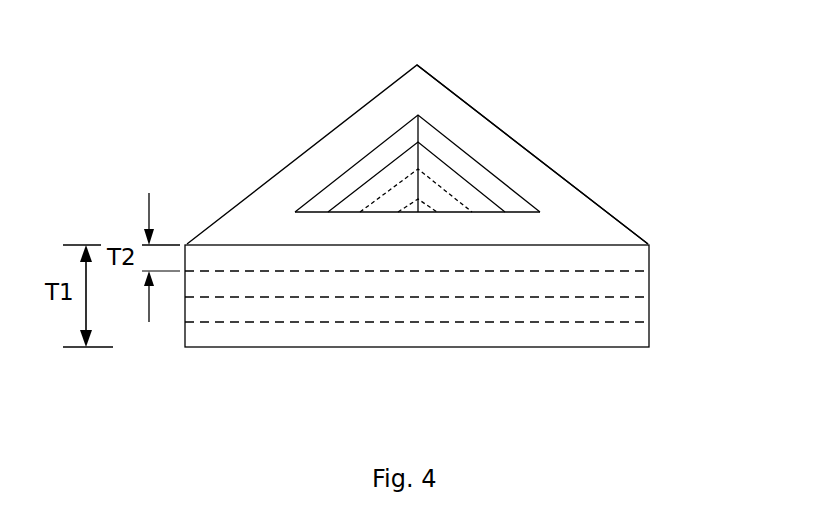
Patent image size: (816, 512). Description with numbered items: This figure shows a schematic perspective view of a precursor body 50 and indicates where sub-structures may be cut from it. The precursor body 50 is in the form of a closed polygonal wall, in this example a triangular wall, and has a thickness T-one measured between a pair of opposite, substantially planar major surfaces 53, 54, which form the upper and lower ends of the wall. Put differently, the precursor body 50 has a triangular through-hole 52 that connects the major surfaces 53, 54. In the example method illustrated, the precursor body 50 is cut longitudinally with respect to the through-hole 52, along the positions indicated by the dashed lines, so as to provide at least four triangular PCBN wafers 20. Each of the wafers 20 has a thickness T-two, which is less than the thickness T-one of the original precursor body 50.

The precursor body 50 is at (288, 121).
The triangular through-hole 52 is at (425, 182).
The major surface 53 is at (581, 154).
The major surface 54 is at (471, 349).
The triangular PCBN wafer 20 is at (637, 258).